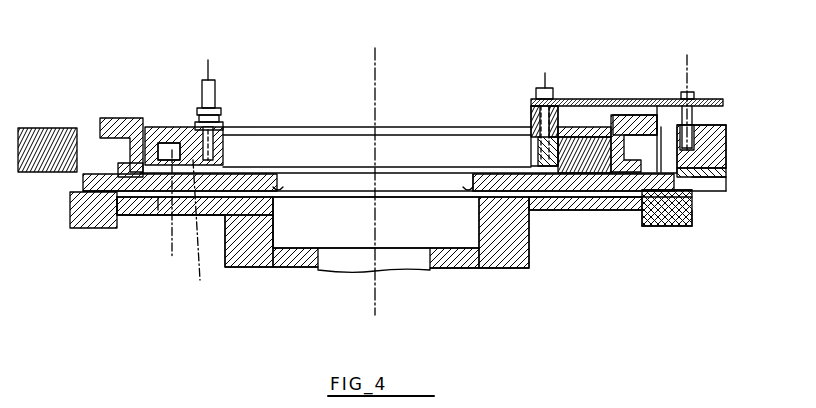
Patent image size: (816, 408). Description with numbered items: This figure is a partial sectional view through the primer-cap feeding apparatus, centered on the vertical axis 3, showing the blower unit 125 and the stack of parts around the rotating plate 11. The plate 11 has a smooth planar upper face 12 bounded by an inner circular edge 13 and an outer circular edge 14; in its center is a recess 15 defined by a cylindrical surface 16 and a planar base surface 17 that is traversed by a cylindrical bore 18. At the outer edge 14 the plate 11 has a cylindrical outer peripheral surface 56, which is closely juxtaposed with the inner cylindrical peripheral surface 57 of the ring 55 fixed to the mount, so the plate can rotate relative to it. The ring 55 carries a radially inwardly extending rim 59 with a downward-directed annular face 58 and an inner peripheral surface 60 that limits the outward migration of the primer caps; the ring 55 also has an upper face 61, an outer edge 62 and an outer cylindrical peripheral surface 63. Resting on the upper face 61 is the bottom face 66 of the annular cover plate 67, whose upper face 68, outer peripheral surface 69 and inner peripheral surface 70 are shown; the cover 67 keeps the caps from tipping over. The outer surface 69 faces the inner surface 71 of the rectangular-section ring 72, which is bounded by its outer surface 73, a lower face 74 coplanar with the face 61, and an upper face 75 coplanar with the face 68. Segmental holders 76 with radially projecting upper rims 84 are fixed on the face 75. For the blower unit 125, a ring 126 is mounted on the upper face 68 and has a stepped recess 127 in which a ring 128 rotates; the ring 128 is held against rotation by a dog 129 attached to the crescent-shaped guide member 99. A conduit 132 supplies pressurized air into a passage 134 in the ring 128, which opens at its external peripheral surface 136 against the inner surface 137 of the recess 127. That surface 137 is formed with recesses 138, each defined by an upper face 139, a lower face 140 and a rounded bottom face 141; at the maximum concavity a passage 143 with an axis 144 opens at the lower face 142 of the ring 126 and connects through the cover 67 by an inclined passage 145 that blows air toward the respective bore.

The vertical axis 3 is at (380, 297).
The plate 11 is at (600, 210).
The upper face 12 is at (517, 187).
The inner circular edge 13 is at (470, 203).
The outer circular edge 14 is at (113, 227).
The recess 15 is at (333, 207).
The cylindrical surface 16 is at (273, 217).
The planar base surface 17 is at (293, 248).
The cylindrical bore 18 is at (345, 258).
The ring 55 is at (692, 210).
The cylindrical outer peripheral surface 56 is at (664, 213).
The inner cylindrical peripheral surface 57 is at (647, 227).
The planar annular face 58 is at (620, 213).
The rim 59 is at (641, 172).
The inner peripheral surface 60 is at (583, 203).
The upper face 61 is at (691, 173).
The circular outer edge 62 is at (689, 188).
The outer cylindrical peripheral surface 63 is at (692, 218).
The bottom face 66 is at (278, 192).
The cover plate 67 is at (275, 175).
The upper face 68 is at (478, 174).
The cylindrical outer peripheral surface 69 is at (643, 117).
The inner cylindrical peripheral surface 70 is at (470, 177).
The inner cylindrical peripheral surface 71 is at (597, 127).
The rectangular-section ring 72 is at (721, 145).
The cylindrical outer peripheral surface 73 is at (724, 135).
The planar lower face 74 is at (692, 220).
The planar upper face 75 is at (704, 98).
The segmental holder 76 is at (640, 112).
The upper rim 84 is at (670, 100).
The crescent-shaped member 99 is at (724, 132).
The blower unit 125 is at (256, 96).
The ring 126 is at (597, 127).
The stepped recess 127 is at (555, 127).
The ring 128 is at (530, 135).
The dog 129 is at (652, 112).
The conduit 132 is at (203, 80).
The passage 134 is at (230, 147).
The external peripheral surface 136 is at (173, 128).
The inner surface 137 is at (560, 203).
The recess 138 is at (167, 130).
The upper face 139 is at (133, 150).
The lower face 140 is at (133, 162).
The rounded bottom face 141 is at (155, 215).
The lower face 142 is at (567, 203).
The passage 143 is at (70, 222).
The axis 144 is at (213, 230).
The inclined passage 145 is at (168, 212).